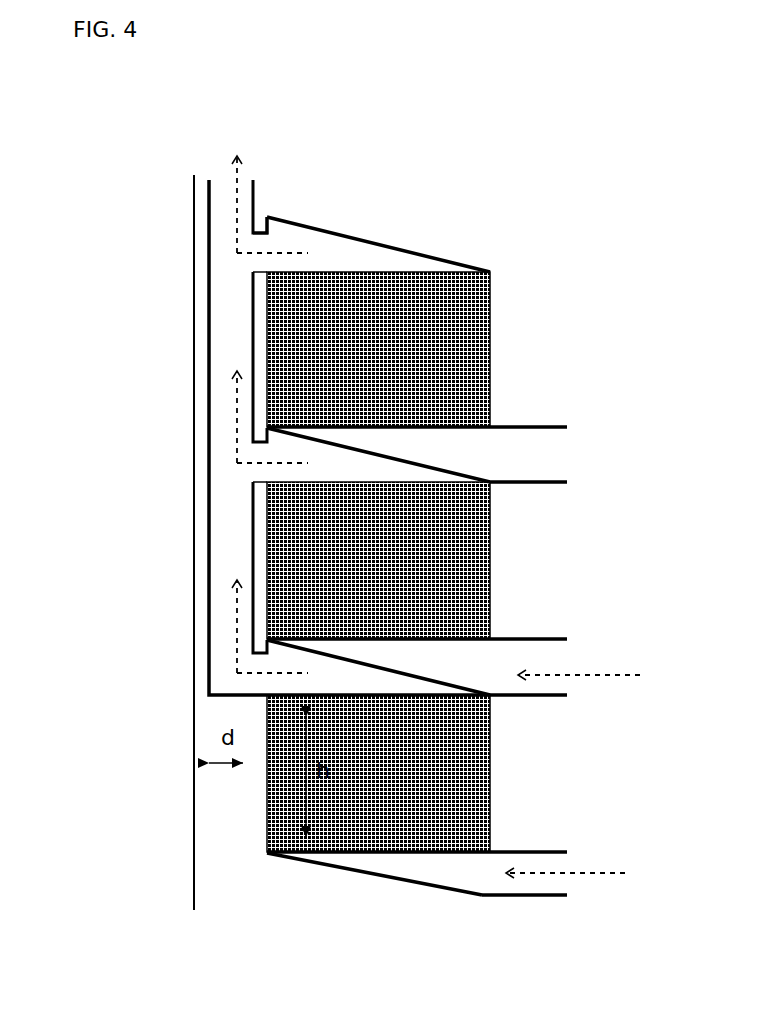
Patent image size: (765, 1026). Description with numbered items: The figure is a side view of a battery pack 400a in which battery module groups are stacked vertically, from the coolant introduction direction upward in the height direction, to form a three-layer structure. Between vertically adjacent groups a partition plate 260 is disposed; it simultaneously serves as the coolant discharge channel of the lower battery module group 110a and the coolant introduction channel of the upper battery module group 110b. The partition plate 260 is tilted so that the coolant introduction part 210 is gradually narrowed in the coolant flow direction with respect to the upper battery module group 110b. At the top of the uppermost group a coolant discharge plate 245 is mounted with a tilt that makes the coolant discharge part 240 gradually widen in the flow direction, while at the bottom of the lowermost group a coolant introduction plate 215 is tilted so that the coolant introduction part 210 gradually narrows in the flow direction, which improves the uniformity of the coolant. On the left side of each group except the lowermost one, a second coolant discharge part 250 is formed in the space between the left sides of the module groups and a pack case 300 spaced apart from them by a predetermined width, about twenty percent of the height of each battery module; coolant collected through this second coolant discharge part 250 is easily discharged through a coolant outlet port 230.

The battery pack 400a is at (142, 164).
The pack case 300 is at (192, 435).
The second coolant discharge part 250 is at (225, 335).
The coolant outlet port 230 is at (245, 185).
The coolant discharge part 240 is at (288, 242).
The coolant discharge plate 245 is at (363, 242).
The upper battery module group 110b is at (505, 343).
The partition plate 260 is at (380, 457).
The lower battery module group 110a is at (505, 555).
The coolant introduction part 210 is at (477, 878).
The coolant introduction plate 215 is at (363, 872).